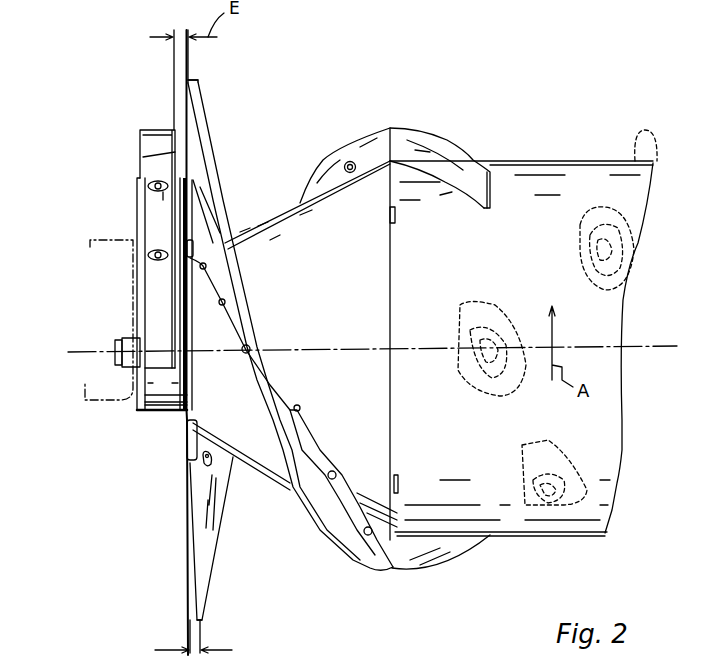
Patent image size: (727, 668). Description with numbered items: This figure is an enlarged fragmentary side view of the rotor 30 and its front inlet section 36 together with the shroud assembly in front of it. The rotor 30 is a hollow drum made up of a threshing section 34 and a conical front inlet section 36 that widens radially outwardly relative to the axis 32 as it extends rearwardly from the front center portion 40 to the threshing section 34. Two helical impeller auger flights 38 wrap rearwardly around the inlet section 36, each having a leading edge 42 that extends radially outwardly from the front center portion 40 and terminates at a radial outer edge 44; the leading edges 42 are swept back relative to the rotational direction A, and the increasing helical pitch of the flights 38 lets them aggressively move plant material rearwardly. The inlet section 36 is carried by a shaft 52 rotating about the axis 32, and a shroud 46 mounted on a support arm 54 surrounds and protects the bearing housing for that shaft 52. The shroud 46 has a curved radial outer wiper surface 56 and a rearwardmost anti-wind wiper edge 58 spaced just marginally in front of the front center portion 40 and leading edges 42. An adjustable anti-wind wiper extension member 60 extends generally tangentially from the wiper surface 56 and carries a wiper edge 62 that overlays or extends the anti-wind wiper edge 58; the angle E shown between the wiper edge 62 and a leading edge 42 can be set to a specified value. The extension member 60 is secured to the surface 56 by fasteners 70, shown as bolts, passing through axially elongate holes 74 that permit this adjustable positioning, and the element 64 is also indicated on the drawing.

The rotor 30 is at (592, 161).
The axis 32 is at (647, 345).
The threshing section 34 is at (533, 161).
The front inlet section 36 is at (262, 222).
The helical impeller auger flight 38 is at (205, 110).
The front center portion 40 is at (187, 437).
The leading edge 42 is at (186, 90).
The radial outer edge 44 is at (198, 82).
The shroud 46 is at (143, 413).
The shaft 52 is at (118, 340).
The support arm 54 is at (95, 240).
The radial outer wiper surface 56 is at (162, 397).
The anti-wind wiper edge 58 is at (180, 393).
The anti-wind wiper extension member 60 is at (140, 130).
The wiper edge 62 is at (175, 152).
The step 64 is at (142, 160).
The fastener 70 is at (160, 247).
The axially elongate hole 74 is at (160, 180).